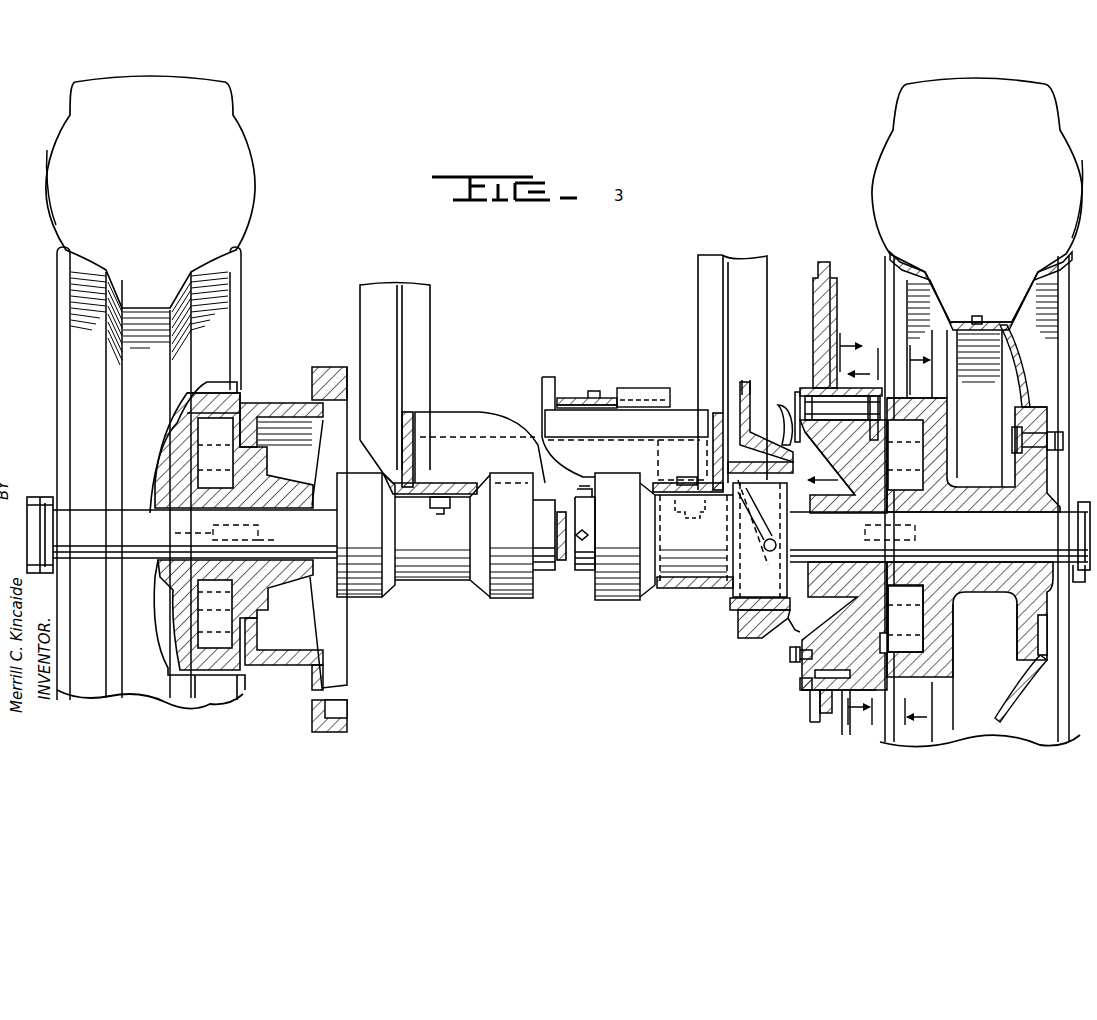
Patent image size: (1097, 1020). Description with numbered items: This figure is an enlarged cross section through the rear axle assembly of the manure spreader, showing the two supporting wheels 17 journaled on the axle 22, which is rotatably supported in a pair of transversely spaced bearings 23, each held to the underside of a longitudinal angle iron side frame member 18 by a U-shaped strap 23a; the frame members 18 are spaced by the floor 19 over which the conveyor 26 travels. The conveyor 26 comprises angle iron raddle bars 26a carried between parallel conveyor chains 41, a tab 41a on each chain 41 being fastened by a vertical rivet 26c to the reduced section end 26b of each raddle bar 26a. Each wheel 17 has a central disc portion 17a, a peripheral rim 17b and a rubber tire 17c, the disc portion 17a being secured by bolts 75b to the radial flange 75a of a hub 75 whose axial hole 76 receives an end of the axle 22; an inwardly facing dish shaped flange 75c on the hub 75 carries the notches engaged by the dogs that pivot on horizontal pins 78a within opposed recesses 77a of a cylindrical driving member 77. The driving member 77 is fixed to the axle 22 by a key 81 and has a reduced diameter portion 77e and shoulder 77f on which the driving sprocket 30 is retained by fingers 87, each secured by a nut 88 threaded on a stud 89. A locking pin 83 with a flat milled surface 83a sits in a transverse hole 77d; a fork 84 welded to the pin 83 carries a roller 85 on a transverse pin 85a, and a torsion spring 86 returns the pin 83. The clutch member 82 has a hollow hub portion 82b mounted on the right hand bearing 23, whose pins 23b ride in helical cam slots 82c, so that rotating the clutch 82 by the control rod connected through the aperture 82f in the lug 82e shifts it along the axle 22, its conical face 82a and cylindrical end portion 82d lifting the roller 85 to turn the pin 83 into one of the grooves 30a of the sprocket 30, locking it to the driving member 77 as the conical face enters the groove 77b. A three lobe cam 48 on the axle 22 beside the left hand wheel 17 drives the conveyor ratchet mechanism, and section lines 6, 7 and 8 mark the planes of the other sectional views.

The section line 6 is at (920, 530).
The section line 7 is at (863, 540).
The section line 8 is at (835, 400).
The wheels 17 is at (64, 124).
The central disc portion 17a is at (1012, 380).
The peripheral rim 17b is at (70, 258).
The rubber tire 17c is at (47, 178).
The side frame members 18 is at (411, 413).
The floor 19 is at (464, 416).
The axle 22 is at (302, 525).
The bearings 23 is at (521, 599).
The U-shaped strap 23a is at (445, 599).
The pins 23b is at (760, 540).
The conveyor 26 is at (602, 368).
The raddle bars 26a is at (543, 385).
The reduced section end 26b is at (585, 410).
The rivet 26c is at (592, 396).
The driving sprocket 30 is at (823, 262).
The transverse grooves 30a is at (803, 688).
The conveyor chains 41 is at (633, 388).
The tab 41a is at (566, 397).
The three lobe cam 48 is at (346, 684).
The hub portion 75 is at (172, 482).
The radial flange 75a is at (1040, 402).
The bolts 75b is at (1012, 442).
The dish shaped flange 75c is at (241, 402).
The axial hole 76 is at (152, 506).
The driving member 77 is at (872, 680).
The recesses 77a is at (254, 450).
The circular groove 77b is at (824, 634).
The transverse hole 77d is at (826, 463).
The reduced diameter portion 77e is at (800, 682).
The shoulder 77f is at (852, 718).
The horizontal pin 78a is at (904, 619).
The key 81 is at (182, 544).
The clutch member 82 is at (735, 606).
The conically shaped face portion 82a is at (770, 637).
The hollow hub portion 82b is at (727, 588).
The helical cam slot 82c is at (752, 512).
The cylindrical end portion 82d is at (790, 630).
The lug 82e is at (740, 380).
The aperture 82f is at (748, 382).
The locking pin 83 is at (816, 400).
The flat milled surface 83a is at (825, 400).
The fork 84 is at (797, 400).
The roller 85 is at (786, 414).
The transverse pin 85a is at (776, 452).
The torsion spring 86 is at (884, 392).
The fingers 87 is at (810, 712).
The nut 88 is at (790, 652).
The stud 89 is at (804, 660).